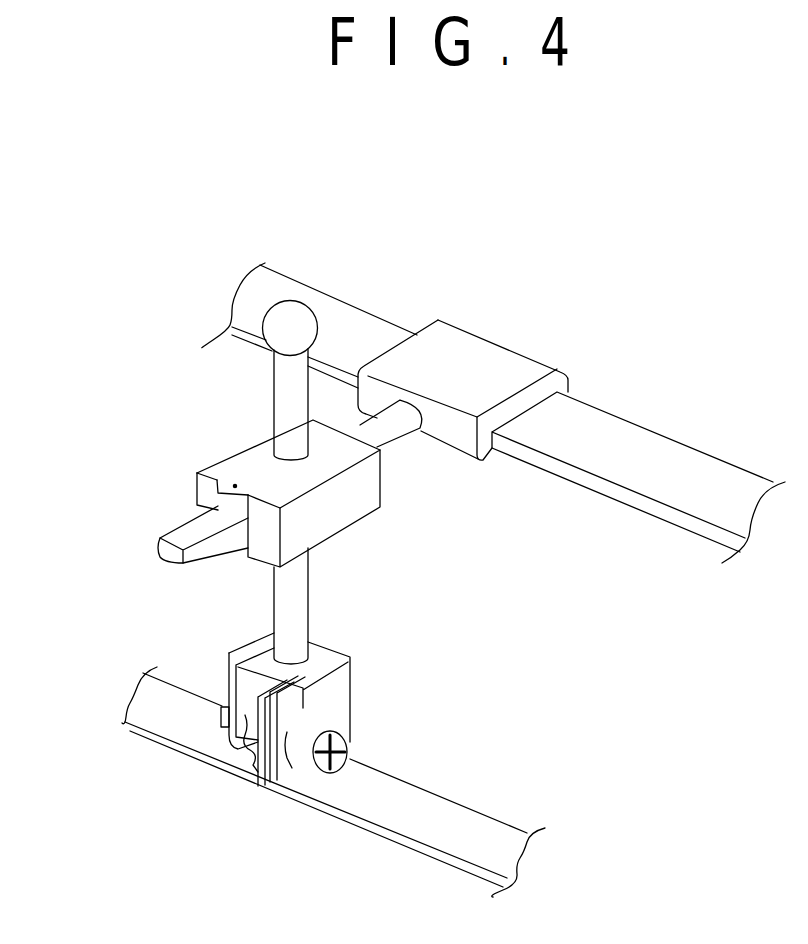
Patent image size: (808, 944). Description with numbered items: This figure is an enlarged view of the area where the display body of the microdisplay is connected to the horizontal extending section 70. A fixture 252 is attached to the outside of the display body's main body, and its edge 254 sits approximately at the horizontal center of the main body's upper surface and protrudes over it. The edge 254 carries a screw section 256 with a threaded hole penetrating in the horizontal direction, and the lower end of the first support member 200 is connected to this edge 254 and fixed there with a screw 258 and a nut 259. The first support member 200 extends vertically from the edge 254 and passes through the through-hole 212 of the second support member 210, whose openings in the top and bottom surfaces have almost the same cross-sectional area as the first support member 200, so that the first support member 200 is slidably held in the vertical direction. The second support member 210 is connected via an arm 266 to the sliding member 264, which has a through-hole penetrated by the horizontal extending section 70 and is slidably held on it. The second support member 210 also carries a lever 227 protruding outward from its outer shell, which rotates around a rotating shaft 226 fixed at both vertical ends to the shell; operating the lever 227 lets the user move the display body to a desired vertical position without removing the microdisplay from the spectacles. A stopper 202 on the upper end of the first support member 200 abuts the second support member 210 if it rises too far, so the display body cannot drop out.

The horizontal extending section 70 is at (635, 450).
The first support member 200 is at (300, 610).
The stopper 202 is at (300, 320).
The second support member 210 is at (357, 515).
The through-hole 212 is at (260, 457).
The rotating shaft 226 is at (235, 485).
The lever 227 is at (184, 540).
The fixture 252 is at (455, 823).
The edge 254 is at (277, 717).
The screw section 256 is at (288, 752).
The screw 258 is at (348, 747).
The nut 259 is at (222, 707).
The sliding member 264 is at (480, 362).
The arm 266 is at (400, 420).